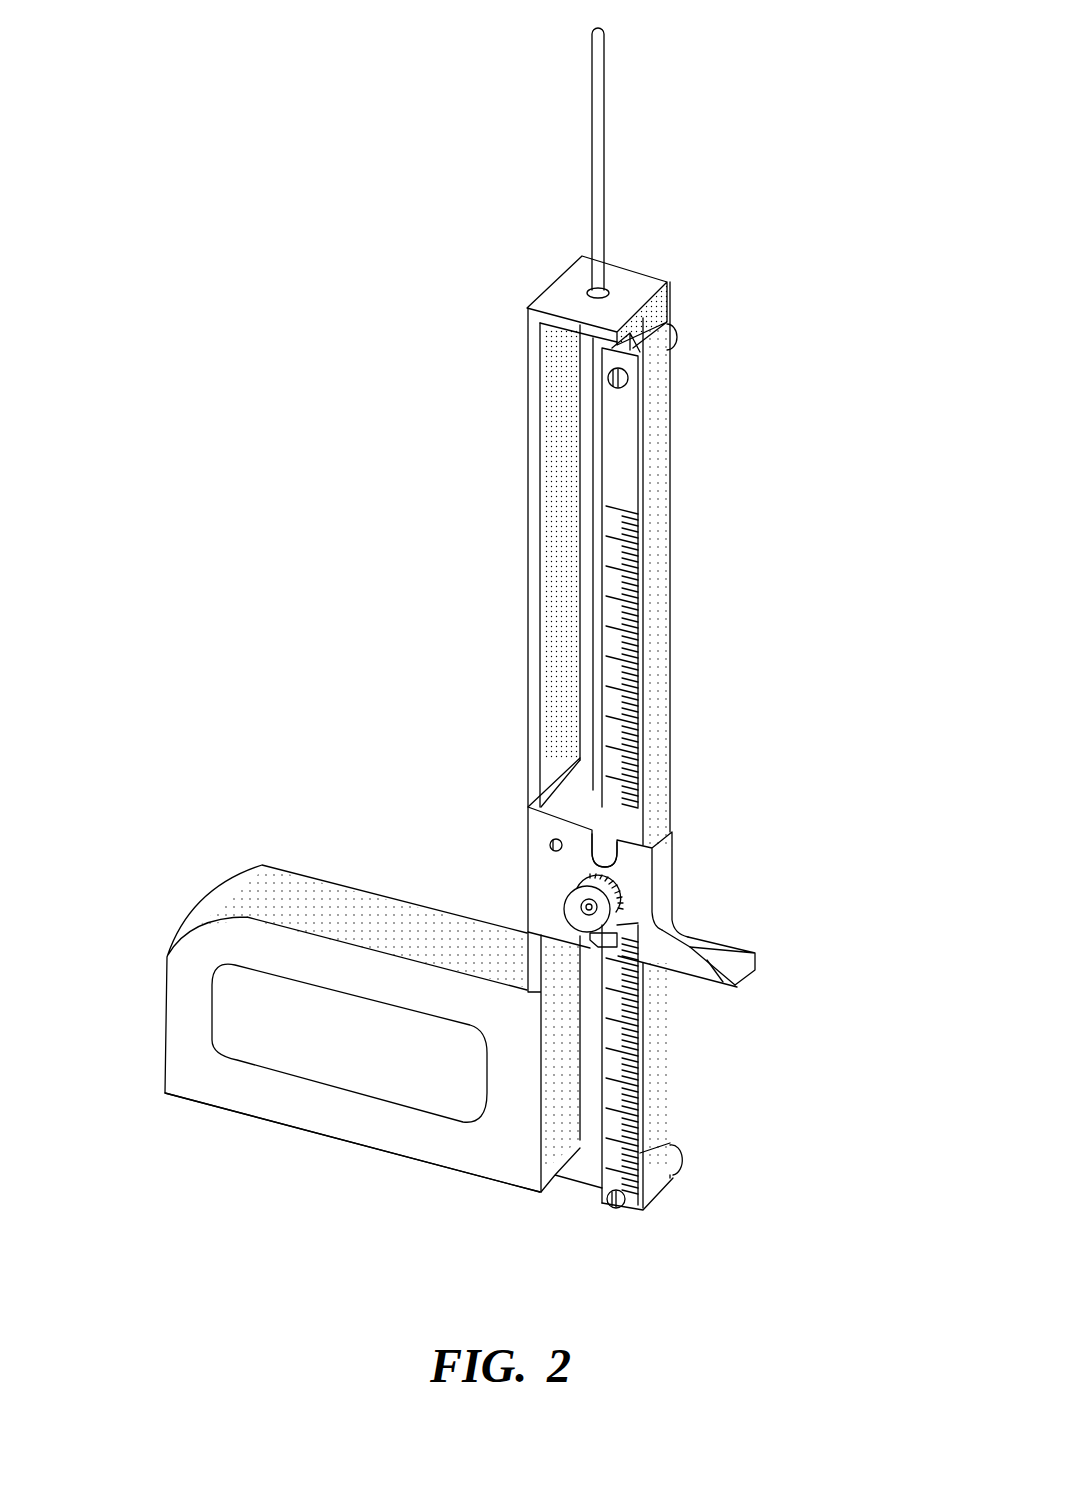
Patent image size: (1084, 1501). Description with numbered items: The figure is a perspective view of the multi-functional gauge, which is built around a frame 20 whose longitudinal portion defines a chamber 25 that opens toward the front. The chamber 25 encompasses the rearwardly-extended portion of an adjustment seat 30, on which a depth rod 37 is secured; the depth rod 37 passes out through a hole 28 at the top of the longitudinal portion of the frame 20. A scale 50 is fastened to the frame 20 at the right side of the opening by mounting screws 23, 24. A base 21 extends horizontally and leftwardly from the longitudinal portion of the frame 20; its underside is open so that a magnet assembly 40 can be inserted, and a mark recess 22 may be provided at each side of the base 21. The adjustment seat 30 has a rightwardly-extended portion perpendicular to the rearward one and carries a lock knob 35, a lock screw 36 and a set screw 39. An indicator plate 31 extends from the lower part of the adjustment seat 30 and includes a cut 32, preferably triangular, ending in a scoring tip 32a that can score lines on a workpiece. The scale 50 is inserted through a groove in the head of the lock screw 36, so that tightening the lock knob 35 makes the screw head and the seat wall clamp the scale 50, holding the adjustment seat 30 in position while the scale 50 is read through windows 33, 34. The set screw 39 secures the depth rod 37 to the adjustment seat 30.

The frame 20 is at (528, 583).
The base 21 is at (316, 870).
The mark recess 22 is at (280, 1062).
The mounting screw 23 is at (627, 388).
The mounting screw 24 is at (617, 1208).
The chamber 25 is at (548, 440).
The hole 28 is at (610, 278).
The adjustment seat 30 is at (677, 868).
The indicator plate 31 is at (683, 930).
The cut 32 is at (725, 993).
The scoring tip 32a is at (722, 988).
The window 33 is at (604, 940).
The window 34 is at (598, 842).
The lock knob 35 is at (582, 897).
The lock screw 36 is at (583, 913).
The depth rod 37 is at (596, 106).
The set screw 39 is at (551, 847).
The magnet assembly 40 is at (440, 1176).
The scale 50 is at (627, 468).